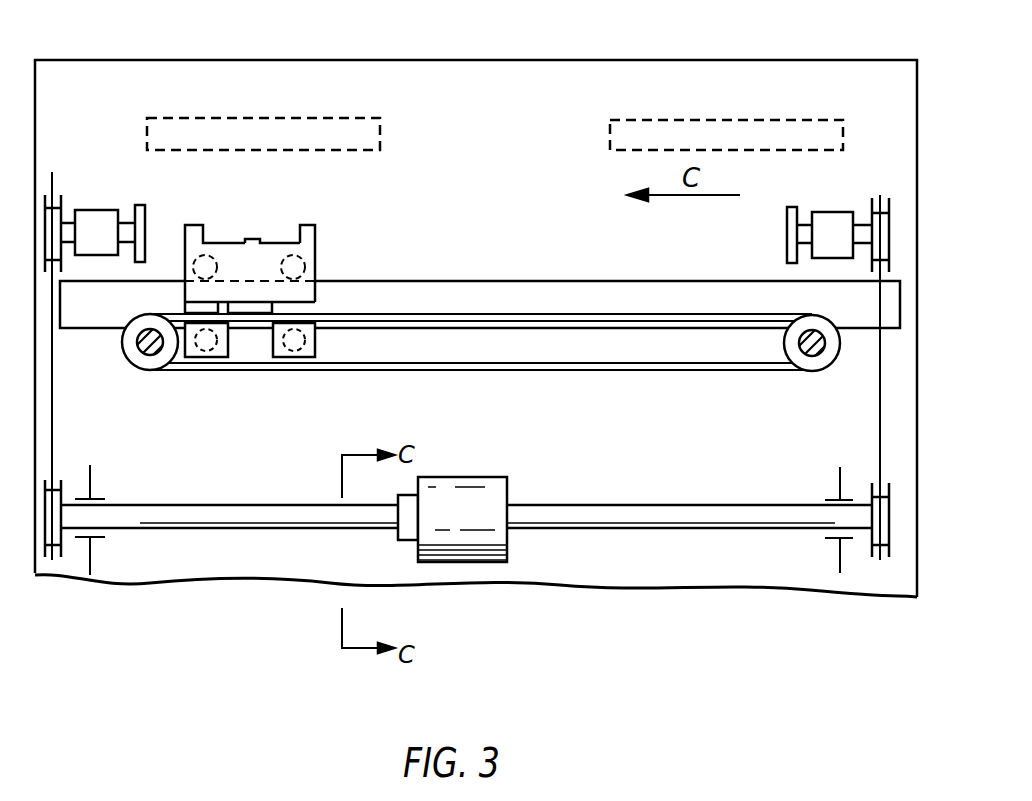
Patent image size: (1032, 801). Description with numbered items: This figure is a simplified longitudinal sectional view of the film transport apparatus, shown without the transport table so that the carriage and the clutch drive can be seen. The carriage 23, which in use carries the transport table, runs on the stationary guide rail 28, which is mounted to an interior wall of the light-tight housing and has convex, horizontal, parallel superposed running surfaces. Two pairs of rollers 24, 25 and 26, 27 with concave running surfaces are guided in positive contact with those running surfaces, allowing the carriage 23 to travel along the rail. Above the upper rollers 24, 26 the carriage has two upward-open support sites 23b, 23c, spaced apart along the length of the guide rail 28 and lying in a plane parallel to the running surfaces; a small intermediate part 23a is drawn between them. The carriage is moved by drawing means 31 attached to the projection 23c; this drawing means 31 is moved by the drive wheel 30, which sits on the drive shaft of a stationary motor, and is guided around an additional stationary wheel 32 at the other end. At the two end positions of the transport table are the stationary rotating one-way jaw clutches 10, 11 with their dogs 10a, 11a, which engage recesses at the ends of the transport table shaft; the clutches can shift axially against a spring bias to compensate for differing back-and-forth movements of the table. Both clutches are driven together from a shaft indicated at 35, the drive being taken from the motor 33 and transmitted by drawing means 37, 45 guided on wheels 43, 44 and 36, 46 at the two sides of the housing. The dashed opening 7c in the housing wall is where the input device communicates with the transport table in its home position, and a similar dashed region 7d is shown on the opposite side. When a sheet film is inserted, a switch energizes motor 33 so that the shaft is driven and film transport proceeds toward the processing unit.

The opening 7c is at (355, 118).
The sensor region 7d is at (700, 130).
The one-way jaw clutch 10 is at (828, 218).
The dog 10a is at (787, 210).
The one-way jaw clutch 11 is at (92, 217).
The dog 11a is at (138, 202).
The carriage 23 is at (293, 235).
The carriage projection 23a is at (257, 237).
The support site 23b is at (197, 227).
The projection 23c is at (212, 300).
The roller 24 is at (212, 252).
The roller 25 is at (203, 362).
The roller 26 is at (293, 232).
The roller 27 is at (292, 363).
The guide rail 28 is at (533, 297).
The drive wheel 30 is at (152, 365).
The drawing means 31 is at (645, 372).
The stationary wheel 32 is at (800, 360).
The motor 33 is at (472, 540).
The drive shaft 35 is at (578, 530).
The wheel 36 is at (882, 538).
The drawing means 37 is at (877, 413).
The wheel 43 is at (52, 195).
The wheel 44 is at (50, 545).
The drawing means 45 is at (55, 413).
The wheel 46 is at (880, 212).